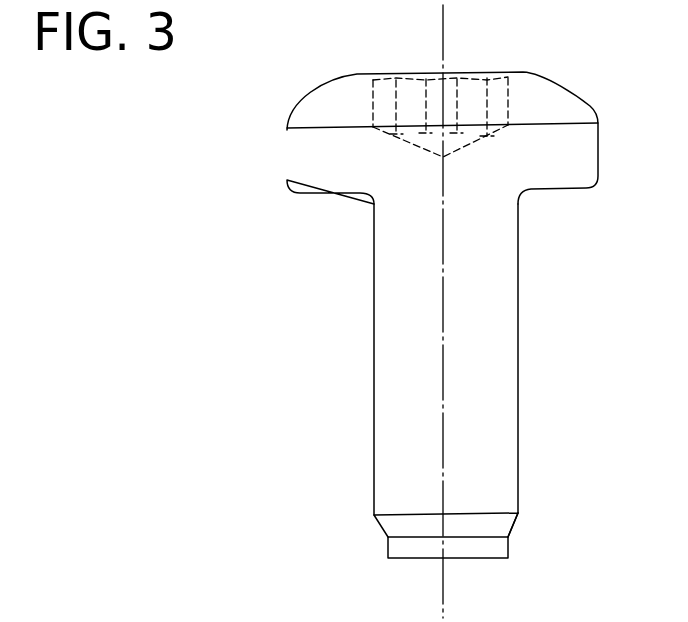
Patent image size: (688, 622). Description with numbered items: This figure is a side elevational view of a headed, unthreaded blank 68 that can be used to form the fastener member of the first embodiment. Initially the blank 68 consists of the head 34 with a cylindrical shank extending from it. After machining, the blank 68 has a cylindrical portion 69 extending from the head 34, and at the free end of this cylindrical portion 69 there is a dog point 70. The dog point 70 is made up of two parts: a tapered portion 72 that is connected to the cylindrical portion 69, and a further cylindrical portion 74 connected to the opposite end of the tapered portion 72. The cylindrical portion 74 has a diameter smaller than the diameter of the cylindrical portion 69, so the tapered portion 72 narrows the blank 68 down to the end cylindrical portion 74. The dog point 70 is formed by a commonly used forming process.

The head 34 is at (296, 149).
The blank 68 is at (409, 333).
The cylindrical portion 69 is at (398, 313).
The dog point 70 is at (378, 541).
The tapered portion 72 is at (512, 524).
The cylindrical portion 74 is at (500, 556).